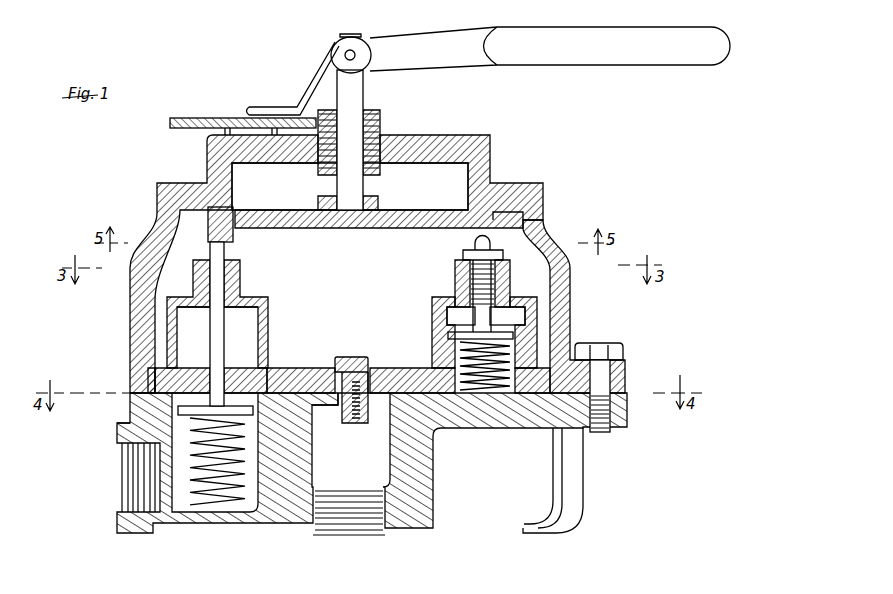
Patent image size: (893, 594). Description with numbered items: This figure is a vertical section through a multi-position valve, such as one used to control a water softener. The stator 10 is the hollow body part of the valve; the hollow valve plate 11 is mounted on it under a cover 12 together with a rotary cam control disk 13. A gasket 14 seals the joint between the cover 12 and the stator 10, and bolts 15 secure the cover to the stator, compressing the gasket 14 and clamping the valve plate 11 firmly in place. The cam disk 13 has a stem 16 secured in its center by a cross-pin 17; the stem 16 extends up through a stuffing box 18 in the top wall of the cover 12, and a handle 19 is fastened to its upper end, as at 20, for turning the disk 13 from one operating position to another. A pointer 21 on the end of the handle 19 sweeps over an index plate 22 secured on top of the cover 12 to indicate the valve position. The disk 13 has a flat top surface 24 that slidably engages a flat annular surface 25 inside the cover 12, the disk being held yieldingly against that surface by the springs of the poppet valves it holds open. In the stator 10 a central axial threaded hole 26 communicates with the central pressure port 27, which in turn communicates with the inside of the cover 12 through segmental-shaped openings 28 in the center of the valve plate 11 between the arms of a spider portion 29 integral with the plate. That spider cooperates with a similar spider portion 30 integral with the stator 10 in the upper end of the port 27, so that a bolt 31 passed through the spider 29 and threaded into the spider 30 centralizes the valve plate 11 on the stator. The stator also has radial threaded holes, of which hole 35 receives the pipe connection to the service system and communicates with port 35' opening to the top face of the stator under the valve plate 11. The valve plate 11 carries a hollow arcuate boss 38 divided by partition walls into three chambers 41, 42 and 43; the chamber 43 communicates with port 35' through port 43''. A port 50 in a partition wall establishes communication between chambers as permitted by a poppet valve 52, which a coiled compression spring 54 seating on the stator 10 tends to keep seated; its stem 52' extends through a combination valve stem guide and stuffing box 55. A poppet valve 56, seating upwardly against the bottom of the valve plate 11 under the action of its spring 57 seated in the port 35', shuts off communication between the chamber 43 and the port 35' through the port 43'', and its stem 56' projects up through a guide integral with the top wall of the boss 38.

The stator 10 is at (172, 401).
The valve plate 11 is at (162, 378).
The cover 12 is at (133, 310).
The rotary cam control disk 13 is at (493, 218).
The gasket 14 is at (160, 393).
The bolts 15 is at (596, 351).
The stem 16 is at (355, 98).
The cross-pin 17 is at (380, 203).
The stuffing box 18 is at (381, 128).
The handle 19 is at (512, 62).
The fastening of handle to stem 20 is at (356, 54).
The pointer 21 is at (266, 107).
The index plate 22 is at (188, 129).
The flat top surface 24 is at (228, 200).
The flat annular surface 25 is at (216, 212).
The central axial threaded hole 26 is at (364, 524).
The central pressure port 27 is at (461, 480).
The segmental-shaped openings 28 is at (380, 375).
The spider portion 29 is at (322, 370).
The spider portion 30 is at (325, 407).
The bolt 31 is at (350, 360).
The radial threaded hole 35 is at (118, 485).
The port 35' is at (121, 434).
The hollow arcuate boss 38 is at (263, 301).
The chamber 41 is at (484, 333).
The chamber 42 is at (461, 316).
The chamber 43 is at (217, 327).
The port 43'' is at (211, 381).
The port 50 is at (507, 316).
The poppet valve 52 is at (450, 346).
The valve stem 52' is at (457, 284).
The coiled compression spring 54 is at (491, 366).
The combination valve stem guide and stuffing box 55 is at (455, 270).
The poppet valve 56 is at (215, 384).
The valve stem 56' is at (231, 324).
The spring 57 is at (190, 463).